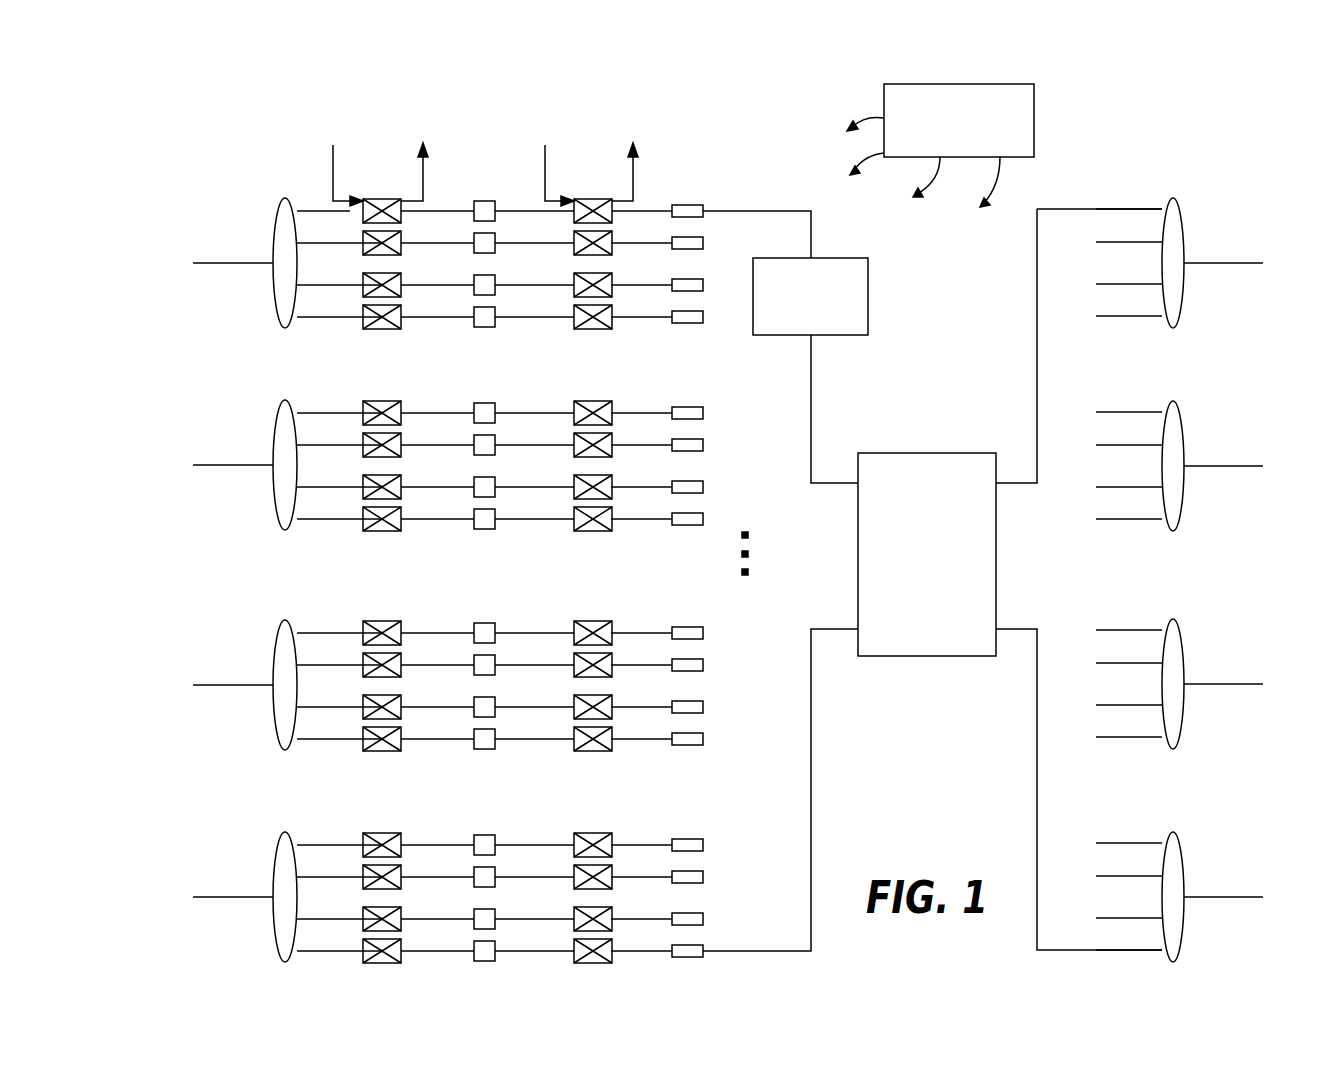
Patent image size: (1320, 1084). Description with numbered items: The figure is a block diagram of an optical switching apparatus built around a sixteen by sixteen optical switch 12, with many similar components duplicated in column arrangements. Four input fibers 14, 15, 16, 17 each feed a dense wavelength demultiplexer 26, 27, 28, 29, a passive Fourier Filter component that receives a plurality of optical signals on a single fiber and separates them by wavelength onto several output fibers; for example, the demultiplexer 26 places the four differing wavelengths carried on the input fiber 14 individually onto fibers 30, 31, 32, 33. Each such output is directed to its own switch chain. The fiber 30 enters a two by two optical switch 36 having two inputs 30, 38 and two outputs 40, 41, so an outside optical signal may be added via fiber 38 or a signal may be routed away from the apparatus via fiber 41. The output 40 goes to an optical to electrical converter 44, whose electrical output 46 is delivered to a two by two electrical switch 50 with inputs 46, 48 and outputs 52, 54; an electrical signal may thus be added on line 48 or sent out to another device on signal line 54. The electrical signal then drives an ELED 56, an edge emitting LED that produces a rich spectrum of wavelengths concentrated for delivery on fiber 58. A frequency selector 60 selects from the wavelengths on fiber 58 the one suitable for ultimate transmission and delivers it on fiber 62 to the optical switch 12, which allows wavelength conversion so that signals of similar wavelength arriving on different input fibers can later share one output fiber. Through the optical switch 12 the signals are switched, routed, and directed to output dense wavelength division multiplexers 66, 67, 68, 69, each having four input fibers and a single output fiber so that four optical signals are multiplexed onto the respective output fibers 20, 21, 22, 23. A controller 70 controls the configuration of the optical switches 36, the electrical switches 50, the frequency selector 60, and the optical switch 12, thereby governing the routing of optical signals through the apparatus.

The 16×16 optical switch 12 is at (912, 453).
The input fiber 14 is at (222, 262).
The input fiber 15 is at (222, 464).
The input fiber 16 is at (222, 684).
The input fiber 17 is at (222, 896).
The output fiber 20 is at (1240, 262).
The output fiber 21 is at (1240, 465).
The output fiber 22 is at (1240, 683).
The output fiber 23 is at (1240, 895).
The dense wavelength demultiplexer 26 is at (278, 202).
The dense wavelength demultiplexer 27 is at (278, 406).
The dense wavelength demultiplexer 28 is at (278, 624).
The dense wavelength demultiplexer 29 is at (278, 836).
The output fiber of DWDM 30 is at (310, 209).
The output fiber of DWDM 31 is at (310, 242).
The output fiber of DWDM 32 is at (310, 284).
The output fiber of DWDM 33 is at (310, 316).
The 2×2 optical switch 36 is at (368, 196).
The fiber 38 is at (333, 160).
The output 40 is at (410, 214).
The fiber 41 is at (423, 186).
The optical to electrical converter 44 is at (478, 200).
The output 46 is at (503, 214).
The line 48 is at (545, 160).
The 2×2 electrical switch 50 is at (579, 196).
The output 52 is at (619, 214).
The signal line 54 is at (633, 186).
The ELED 56 is at (678, 204).
The fiber 58 is at (720, 214).
The frequency selector 60 is at (845, 257).
The fiber 62 is at (811, 382).
The output dense wavelength division multiplexer 66 is at (1180, 208).
The output dense wavelength division multiplexer 67 is at (1180, 411).
The output dense wavelength division multiplexer 68 is at (1180, 630).
The output dense wavelength division multiplexer 69 is at (1180, 843).
The controller 70 is at (946, 152).